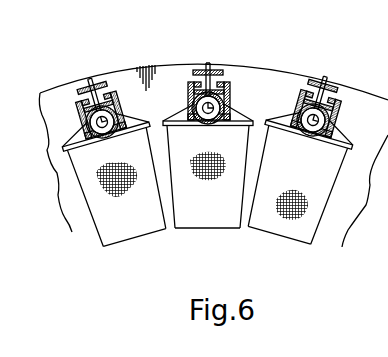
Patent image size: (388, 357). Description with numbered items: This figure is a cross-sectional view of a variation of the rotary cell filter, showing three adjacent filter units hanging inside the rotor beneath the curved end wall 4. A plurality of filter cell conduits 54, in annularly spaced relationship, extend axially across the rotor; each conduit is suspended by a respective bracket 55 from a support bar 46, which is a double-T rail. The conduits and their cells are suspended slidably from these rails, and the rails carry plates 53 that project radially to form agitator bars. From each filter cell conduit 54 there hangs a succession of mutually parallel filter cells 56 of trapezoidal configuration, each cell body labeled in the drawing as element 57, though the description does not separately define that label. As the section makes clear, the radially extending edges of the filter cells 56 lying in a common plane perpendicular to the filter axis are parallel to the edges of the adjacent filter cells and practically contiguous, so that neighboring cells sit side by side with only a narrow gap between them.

The end wall 4 is at (278, 72).
The support bar 46 is at (336, 84).
The plate 53 is at (212, 63).
The filter cell conduit 54 is at (130, 118).
The bracket 55 is at (117, 103).
The filter cell 56 is at (192, 222).
The chamber 57 is at (93, 133).